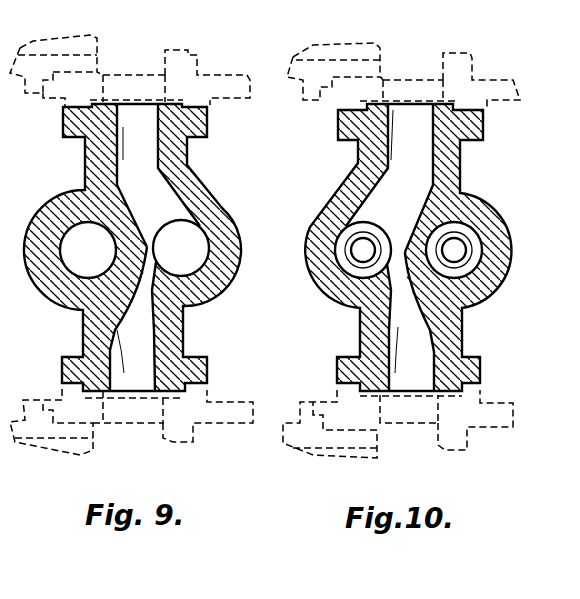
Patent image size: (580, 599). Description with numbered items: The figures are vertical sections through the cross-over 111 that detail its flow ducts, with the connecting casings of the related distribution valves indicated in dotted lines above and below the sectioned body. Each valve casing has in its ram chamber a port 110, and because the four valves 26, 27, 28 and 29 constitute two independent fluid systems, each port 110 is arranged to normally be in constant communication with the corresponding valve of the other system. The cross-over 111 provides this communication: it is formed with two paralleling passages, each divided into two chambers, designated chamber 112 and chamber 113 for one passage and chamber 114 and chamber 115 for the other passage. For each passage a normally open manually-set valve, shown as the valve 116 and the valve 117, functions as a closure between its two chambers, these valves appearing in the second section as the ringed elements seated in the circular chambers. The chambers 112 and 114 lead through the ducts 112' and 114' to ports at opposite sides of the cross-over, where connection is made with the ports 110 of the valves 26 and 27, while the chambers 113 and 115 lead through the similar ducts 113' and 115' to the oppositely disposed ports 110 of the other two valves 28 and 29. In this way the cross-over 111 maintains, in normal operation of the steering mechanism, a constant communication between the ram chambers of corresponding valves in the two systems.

In FIG. 9, the port 110 is at (143, 80).
In FIG. 10, the port 110 is at (425, 83).
In FIG. 9, the valve 26 is at (209, 73).
In FIG. 9, the valve 27 is at (220, 426).
In FIG. 10, the valve 28 is at (484, 430).
In FIG. 10, the valve 29 is at (489, 78).
In FIG. 9, the cross-over 111 is at (215, 308).
In FIG. 10, the cross-over 111 is at (514, 269).
In FIG. 9, the chamber 112 is at (210, 248).
In FIG. 9, the duct 112' is at (172, 175).
In FIG. 9, the chamber 114 is at (58, 250).
In FIG. 9, the duct 114' is at (94, 319).
In FIG. 10, the chamber 113 is at (485, 250).
In FIG. 10, the duct 113' is at (451, 321).
In FIG. 10, the chamber 115 is at (335, 256).
In FIG. 10, the duct 115' is at (368, 178).
In FIG. 10, the manually-set valve 116 is at (445, 266).
In FIG. 10, the manually-set valve 117 is at (369, 236).